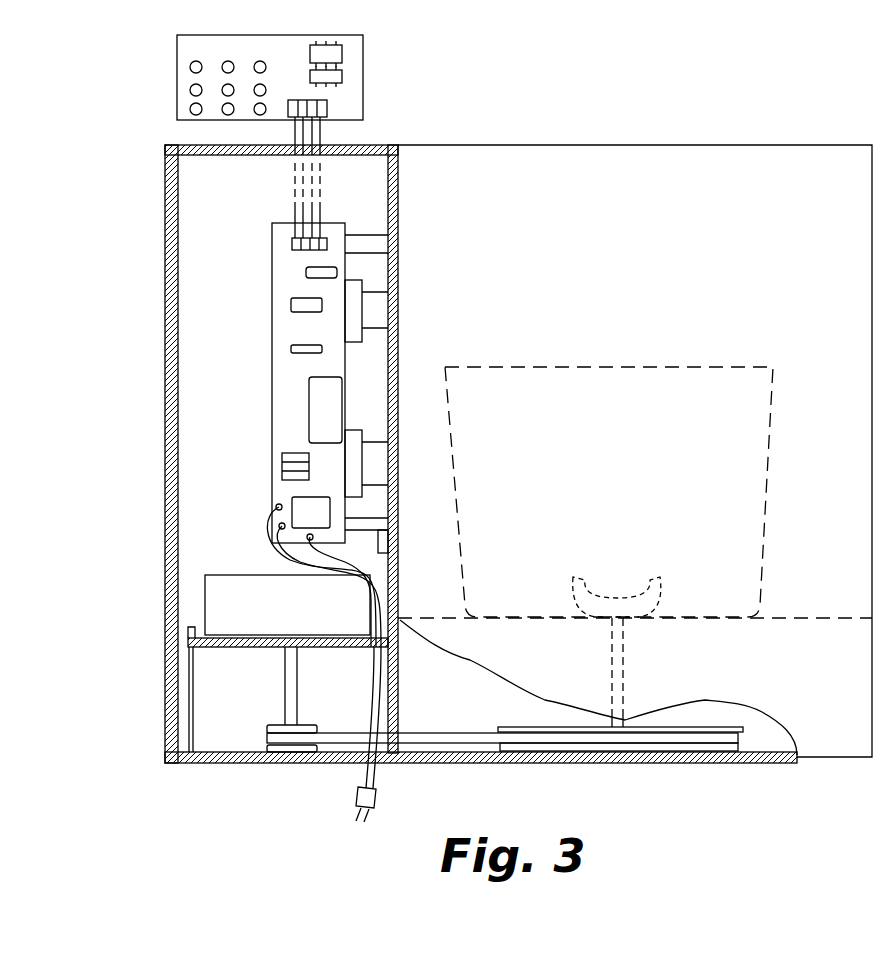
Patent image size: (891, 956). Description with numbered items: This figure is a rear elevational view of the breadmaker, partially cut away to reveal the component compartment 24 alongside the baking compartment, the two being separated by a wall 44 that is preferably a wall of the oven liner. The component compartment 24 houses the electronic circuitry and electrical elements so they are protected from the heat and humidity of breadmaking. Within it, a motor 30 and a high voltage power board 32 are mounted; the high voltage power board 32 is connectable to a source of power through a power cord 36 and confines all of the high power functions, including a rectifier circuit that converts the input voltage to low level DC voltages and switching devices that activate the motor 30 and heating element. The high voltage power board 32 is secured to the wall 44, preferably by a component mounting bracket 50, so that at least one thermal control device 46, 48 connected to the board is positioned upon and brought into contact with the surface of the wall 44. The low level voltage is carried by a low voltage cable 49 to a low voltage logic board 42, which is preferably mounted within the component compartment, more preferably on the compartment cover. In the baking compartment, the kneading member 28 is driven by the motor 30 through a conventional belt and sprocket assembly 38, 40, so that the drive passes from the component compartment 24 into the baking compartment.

The component compartment 24 is at (215, 457).
The kneading member 28 is at (660, 587).
The motor 30 is at (217, 606).
The high voltage power board 32 is at (272, 353).
The power cord 36 is at (353, 797).
The belt and sprocket assembly 38 is at (740, 736).
The belt and sprocket assembly 40 is at (458, 730).
The low voltage logic board 42 is at (365, 67).
The wall 44 is at (398, 277).
The thermal control device 46 is at (375, 317).
The thermal control device 48 is at (378, 475).
The low voltage cable 49 is at (323, 135).
The component mounting bracket 50 is at (377, 247).